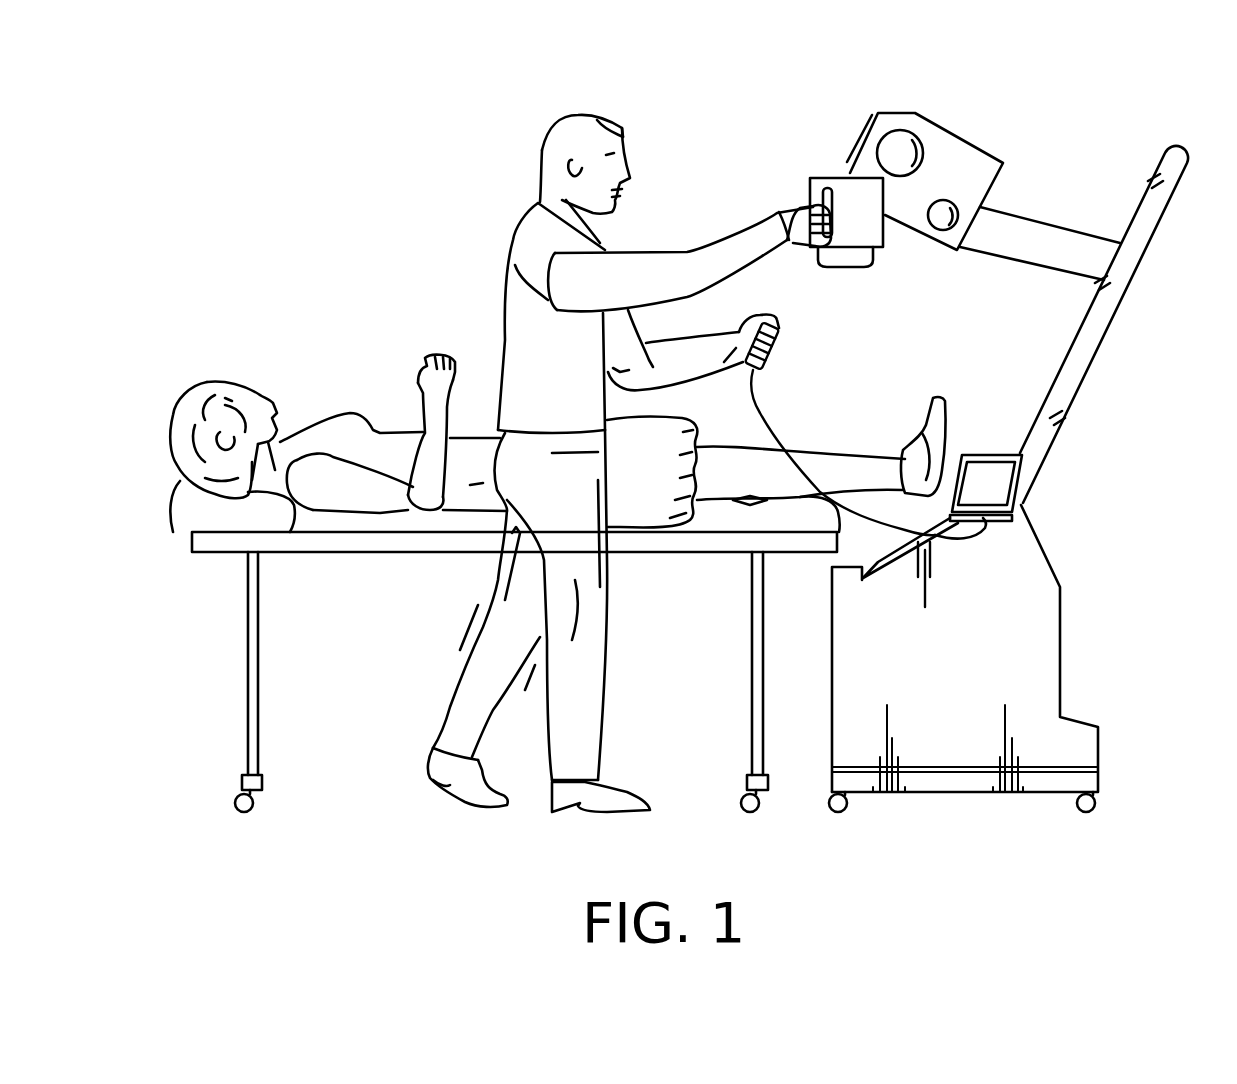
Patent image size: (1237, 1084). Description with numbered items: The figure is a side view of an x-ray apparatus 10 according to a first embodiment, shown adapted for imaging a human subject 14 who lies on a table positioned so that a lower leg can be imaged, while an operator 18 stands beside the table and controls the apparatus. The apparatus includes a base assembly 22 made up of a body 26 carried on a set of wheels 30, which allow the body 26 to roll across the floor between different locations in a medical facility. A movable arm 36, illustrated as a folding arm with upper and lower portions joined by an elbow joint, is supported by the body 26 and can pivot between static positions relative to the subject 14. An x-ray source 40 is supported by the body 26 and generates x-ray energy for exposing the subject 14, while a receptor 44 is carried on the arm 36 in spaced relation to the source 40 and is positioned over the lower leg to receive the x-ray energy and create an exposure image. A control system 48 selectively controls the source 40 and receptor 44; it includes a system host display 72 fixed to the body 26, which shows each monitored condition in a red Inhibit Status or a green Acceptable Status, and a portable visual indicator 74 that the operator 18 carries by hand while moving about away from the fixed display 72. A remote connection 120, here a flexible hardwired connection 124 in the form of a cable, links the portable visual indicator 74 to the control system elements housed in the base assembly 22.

The x-ray apparatus 10 is at (1228, 477).
The human subject 14 is at (250, 388).
The operator 18 is at (555, 148).
The base assembly 22 is at (1000, 648).
The body 26 is at (974, 712).
The set of wheels 30 is at (1097, 810).
The movable arm 36 is at (1005, 243).
The x-ray source 40 is at (892, 576).
The receptor 44 is at (870, 227).
The control system 48 is at (1002, 483).
The system host display 72 is at (1048, 452).
The portable visual indicator 74 is at (781, 328).
The remote connection 120 is at (894, 480).
The flexible hardwired connection 124 is at (924, 559).